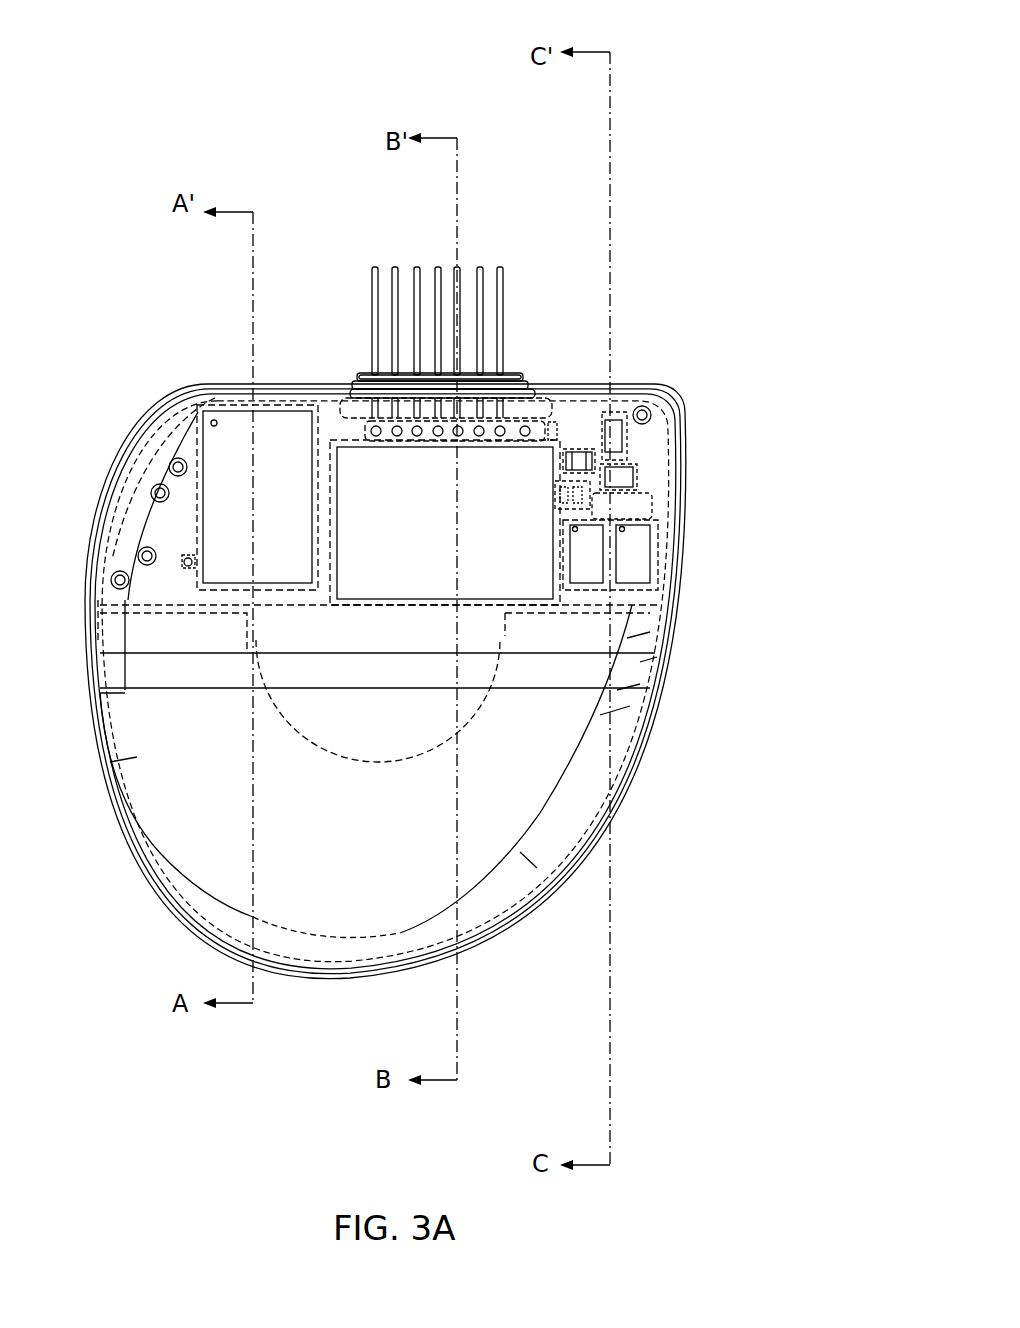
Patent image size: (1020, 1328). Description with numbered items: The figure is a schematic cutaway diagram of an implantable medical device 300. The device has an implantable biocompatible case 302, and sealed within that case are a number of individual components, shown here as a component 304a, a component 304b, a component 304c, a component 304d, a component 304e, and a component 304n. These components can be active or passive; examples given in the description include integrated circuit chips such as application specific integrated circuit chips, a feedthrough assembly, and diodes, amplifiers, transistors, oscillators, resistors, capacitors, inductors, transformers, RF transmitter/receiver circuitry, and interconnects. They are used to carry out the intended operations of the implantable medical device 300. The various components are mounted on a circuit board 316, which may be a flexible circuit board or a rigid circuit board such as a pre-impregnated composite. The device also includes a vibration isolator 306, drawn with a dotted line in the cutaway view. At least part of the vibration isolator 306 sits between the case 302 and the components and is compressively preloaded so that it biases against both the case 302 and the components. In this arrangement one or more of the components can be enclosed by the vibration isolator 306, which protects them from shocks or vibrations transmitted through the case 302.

The implantable medical device 300 is at (765, 93).
The implantable biocompatible case 302 is at (625, 752).
The component 304a is at (257, 497).
The component 304b is at (445, 522).
The component 304c is at (635, 568).
The component 304d is at (620, 442).
The component 304e is at (580, 455).
The component 304n is at (520, 372).
The vibration isolator 306 is at (505, 636).
The circuit board 316 is at (655, 530).